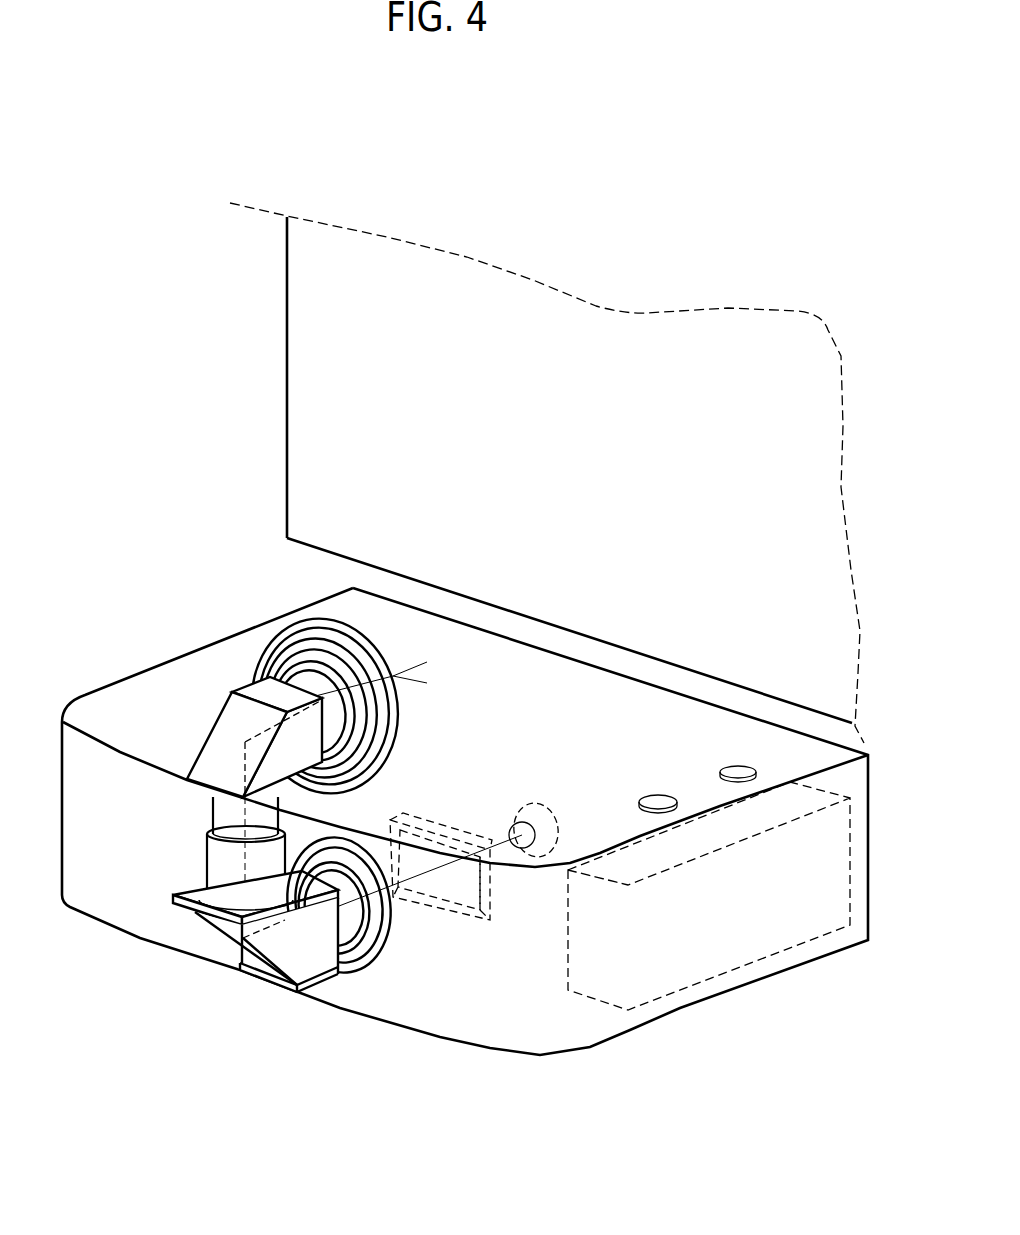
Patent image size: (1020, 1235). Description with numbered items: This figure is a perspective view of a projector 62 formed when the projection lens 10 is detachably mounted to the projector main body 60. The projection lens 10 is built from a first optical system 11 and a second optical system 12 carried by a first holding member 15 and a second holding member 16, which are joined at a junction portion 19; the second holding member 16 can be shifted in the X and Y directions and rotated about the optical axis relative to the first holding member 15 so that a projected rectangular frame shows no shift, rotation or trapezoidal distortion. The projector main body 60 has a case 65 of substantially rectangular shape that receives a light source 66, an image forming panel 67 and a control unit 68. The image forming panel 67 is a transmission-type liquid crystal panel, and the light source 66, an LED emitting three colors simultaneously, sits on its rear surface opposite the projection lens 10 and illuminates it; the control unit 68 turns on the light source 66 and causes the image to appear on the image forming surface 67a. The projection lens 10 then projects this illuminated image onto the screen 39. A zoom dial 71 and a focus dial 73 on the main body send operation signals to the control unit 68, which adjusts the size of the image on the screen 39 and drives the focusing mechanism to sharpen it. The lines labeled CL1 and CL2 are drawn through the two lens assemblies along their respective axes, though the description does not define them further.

The screen 39 is at (287, 354).
The projection lens 10 is at (291, 613).
The projector 62 is at (158, 527).
The projector main body 60 is at (205, 640).
The second holding member 16 is at (228, 732).
The second optical system 12 is at (222, 764).
The junction portion 19 is at (203, 887).
The first optical system 11 is at (207, 930).
The first holding member 15 is at (237, 945).
The case 65 is at (547, 1058).
The control unit 68 is at (737, 965).
The image forming panel 67 is at (405, 822).
The image forming surface 67a is at (462, 918).
The light source 66 is at (518, 808).
The zoom dial 71 is at (658, 802).
The focus dial 73 is at (738, 772).
The center line 1 CL1 is at (418, 863).
The center line 2 CL2 is at (405, 672).